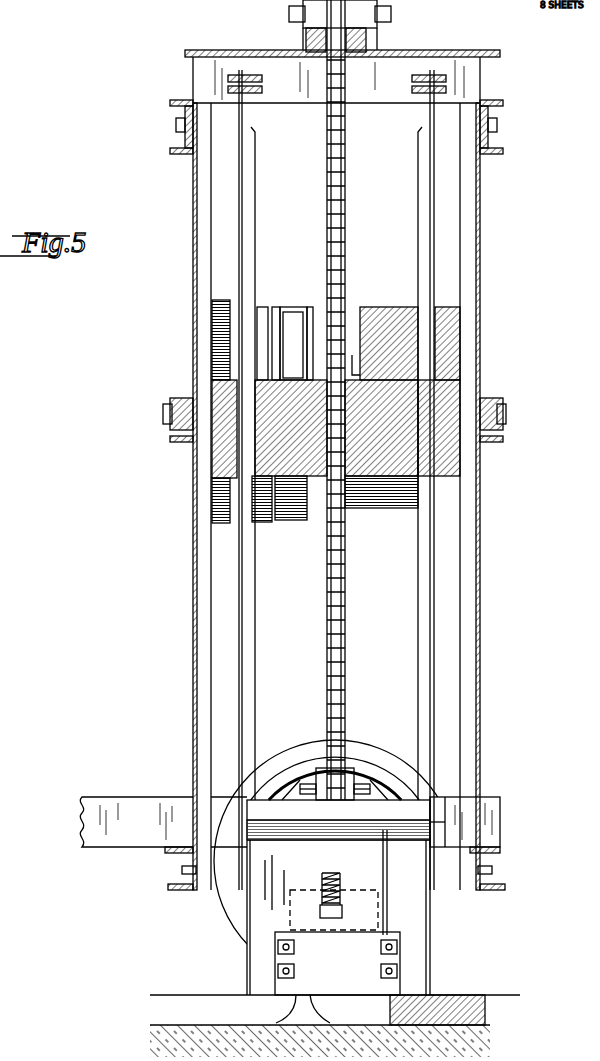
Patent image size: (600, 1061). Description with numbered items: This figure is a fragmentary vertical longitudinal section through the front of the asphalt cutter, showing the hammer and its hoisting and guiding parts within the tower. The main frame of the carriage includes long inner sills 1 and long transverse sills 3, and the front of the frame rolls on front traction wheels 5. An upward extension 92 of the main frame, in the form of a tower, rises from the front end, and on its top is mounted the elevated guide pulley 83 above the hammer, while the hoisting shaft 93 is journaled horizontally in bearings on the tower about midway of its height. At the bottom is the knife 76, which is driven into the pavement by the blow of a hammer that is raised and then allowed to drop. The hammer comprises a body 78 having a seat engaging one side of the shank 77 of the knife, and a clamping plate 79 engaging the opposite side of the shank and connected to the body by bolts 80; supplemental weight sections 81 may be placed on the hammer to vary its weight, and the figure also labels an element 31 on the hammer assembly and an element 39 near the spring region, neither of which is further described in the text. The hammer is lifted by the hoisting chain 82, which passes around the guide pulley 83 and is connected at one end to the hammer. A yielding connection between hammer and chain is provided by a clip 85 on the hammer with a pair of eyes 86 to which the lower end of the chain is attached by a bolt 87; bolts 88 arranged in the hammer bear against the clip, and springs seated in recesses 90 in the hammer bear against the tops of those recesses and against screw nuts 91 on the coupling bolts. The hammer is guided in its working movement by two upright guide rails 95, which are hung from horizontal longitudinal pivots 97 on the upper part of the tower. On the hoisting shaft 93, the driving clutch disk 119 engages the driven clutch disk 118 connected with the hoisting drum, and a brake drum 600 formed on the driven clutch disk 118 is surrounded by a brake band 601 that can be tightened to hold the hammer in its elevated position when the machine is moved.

The inner long sill 1 is at (132, 818).
The long transverse sill 3 is at (168, 886).
The front traction wheel 5 is at (389, 762).
The plate 31 is at (338, 837).
The spring 39 is at (336, 881).
The knife 76 is at (335, 1026).
The shank 77 is at (378, 898).
The hammer body 78 is at (382, 882).
The clamping plate 79 is at (337, 963).
The bolts 80 is at (400, 944).
The supplemental weight sections 81 is at (320, 896).
The hoisting chain 82 is at (346, 222).
The guide pulley 83 is at (340, 26).
The clip 85 is at (316, 808).
The eyes 86 is at (367, 790).
The bolt 87 is at (300, 790).
The bolts 88 is at (320, 881).
The recesses 90 is at (322, 911).
The screw nuts 91 is at (343, 915).
The upward extension 92 is at (195, 280).
The hoisting shaft 93 is at (168, 417).
The guide rails 95 is at (243, 658).
The pivots 97 is at (268, 86).
The driven clutch disk 118 is at (310, 518).
The driving clutch disk 119 is at (258, 307).
The brake drum 600 is at (308, 300).
The brake band 601 is at (297, 345).